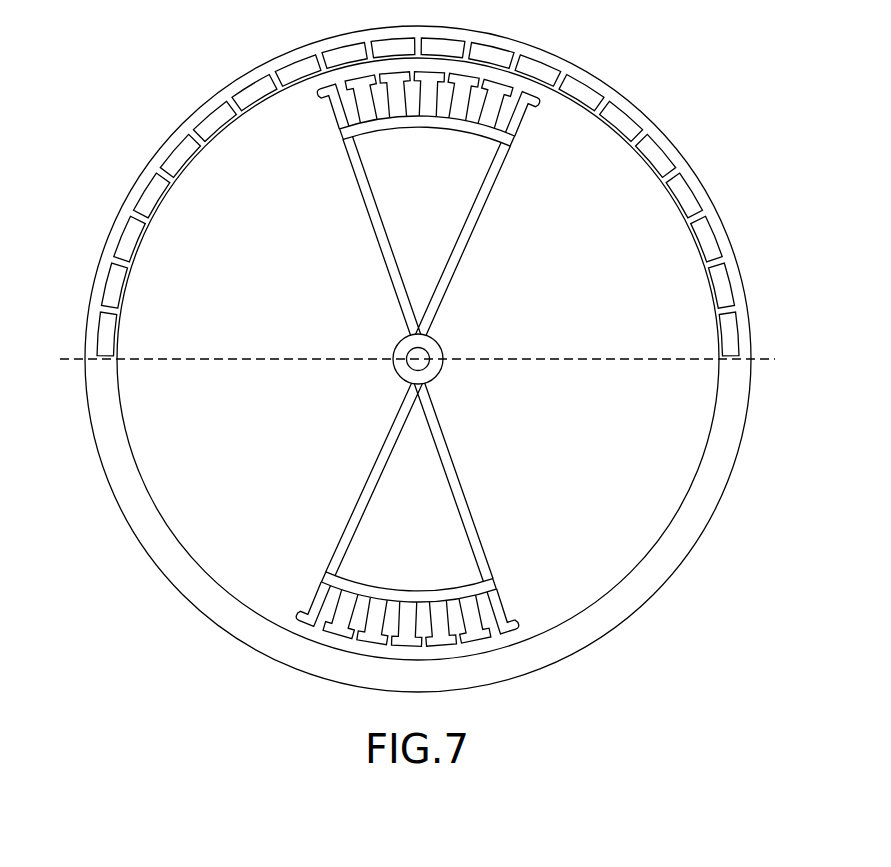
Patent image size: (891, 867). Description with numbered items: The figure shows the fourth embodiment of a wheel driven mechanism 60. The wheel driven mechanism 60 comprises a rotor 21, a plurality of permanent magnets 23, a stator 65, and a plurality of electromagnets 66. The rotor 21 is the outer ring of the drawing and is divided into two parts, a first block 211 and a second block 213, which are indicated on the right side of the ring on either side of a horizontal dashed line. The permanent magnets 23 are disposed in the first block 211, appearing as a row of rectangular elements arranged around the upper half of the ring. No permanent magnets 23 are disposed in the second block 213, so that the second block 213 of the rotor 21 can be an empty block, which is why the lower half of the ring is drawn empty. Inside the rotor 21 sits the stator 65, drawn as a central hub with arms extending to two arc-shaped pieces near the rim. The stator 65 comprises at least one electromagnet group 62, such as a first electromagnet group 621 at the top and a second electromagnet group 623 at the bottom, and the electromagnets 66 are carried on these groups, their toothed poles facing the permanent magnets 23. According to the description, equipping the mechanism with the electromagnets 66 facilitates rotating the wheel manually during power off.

The wheel driven mechanism 60 is at (93, 98).
The rotor 21 is at (474, 359).
The first block 211 is at (754, 337).
The second block 213 is at (754, 393).
The permanent magnets 23 is at (710, 238).
The stator 65 is at (522, 148).
The electromagnets 66 is at (526, 104).
The electromagnet group 62 is at (432, 359).
The first electromagnet group 621 is at (415, 133).
The second electromagnet group 623 is at (413, 583).